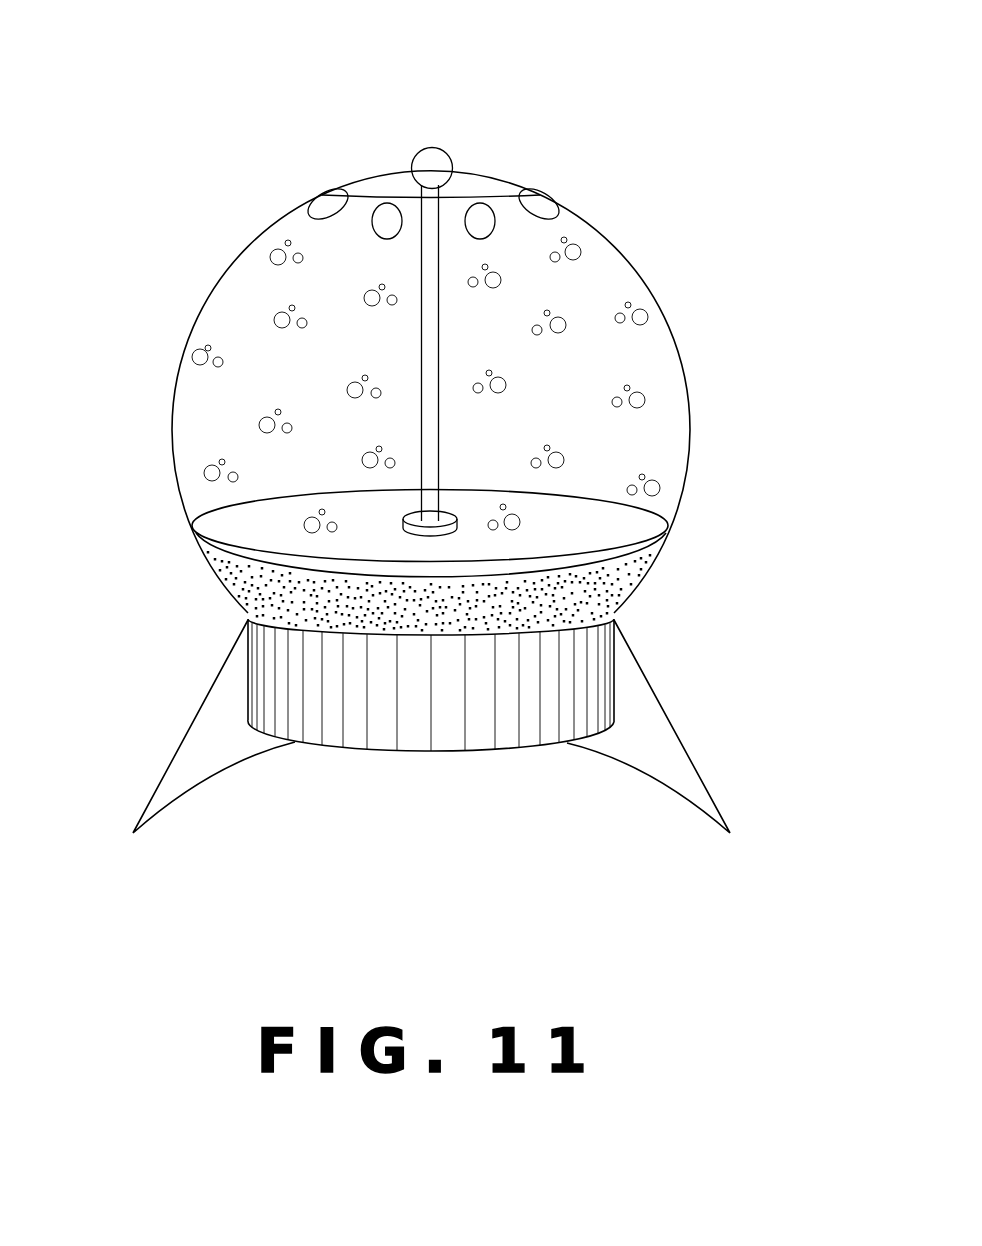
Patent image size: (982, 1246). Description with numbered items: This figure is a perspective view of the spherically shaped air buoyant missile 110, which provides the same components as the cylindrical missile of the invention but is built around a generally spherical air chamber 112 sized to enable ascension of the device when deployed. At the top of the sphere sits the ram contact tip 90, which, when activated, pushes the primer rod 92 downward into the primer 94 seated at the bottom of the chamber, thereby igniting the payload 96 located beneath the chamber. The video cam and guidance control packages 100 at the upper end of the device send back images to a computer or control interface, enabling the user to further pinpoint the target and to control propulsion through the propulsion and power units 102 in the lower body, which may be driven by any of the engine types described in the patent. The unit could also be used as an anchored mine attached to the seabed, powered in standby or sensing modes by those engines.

The ram contact tip 90 is at (430, 164).
The primer rod 92 is at (433, 327).
The primer 94 is at (457, 523).
The payload 96 is at (258, 583).
The video cam and guidance control packages 100 is at (400, 192).
The propulsion and power units 102 is at (422, 720).
The spherically shaped air buoyant missile 110 is at (748, 297).
The spherical air chamber 112 is at (237, 327).